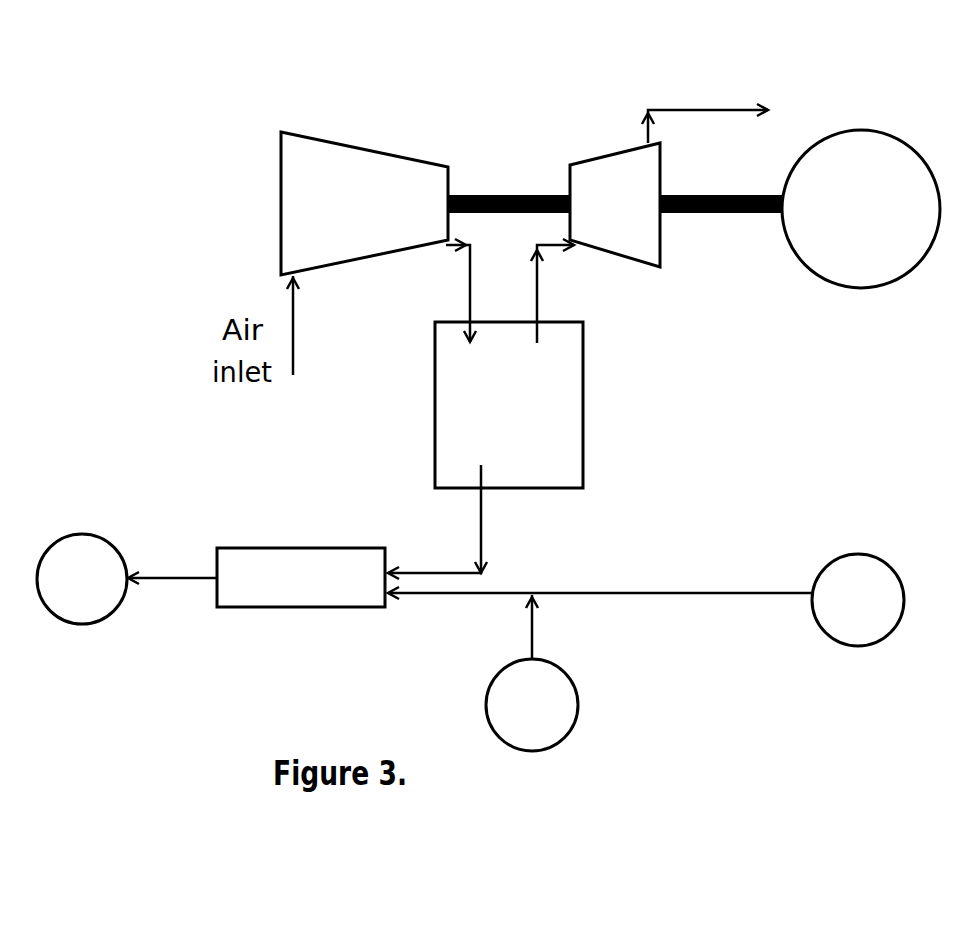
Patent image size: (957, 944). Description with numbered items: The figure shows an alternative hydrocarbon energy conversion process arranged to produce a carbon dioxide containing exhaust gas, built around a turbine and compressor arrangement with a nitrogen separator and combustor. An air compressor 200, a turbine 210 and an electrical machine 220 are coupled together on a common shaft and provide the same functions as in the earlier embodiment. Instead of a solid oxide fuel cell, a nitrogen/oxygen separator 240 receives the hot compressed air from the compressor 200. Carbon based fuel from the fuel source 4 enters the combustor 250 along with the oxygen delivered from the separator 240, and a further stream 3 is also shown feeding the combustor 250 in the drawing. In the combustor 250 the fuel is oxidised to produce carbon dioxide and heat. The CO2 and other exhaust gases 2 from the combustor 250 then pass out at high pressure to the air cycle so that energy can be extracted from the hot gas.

The air compressor 200 is at (352, 132).
The turbine 210 is at (594, 133).
The electrical machine 220 is at (858, 128).
The nitrogen/oxygen separator 240 is at (583, 438).
The combustor 250 is at (257, 553).
The CO2 and other exhaust gases 2 is at (82, 579).
The feed stream 3 is at (532, 705).
The carbon based fuel 4 is at (858, 600).